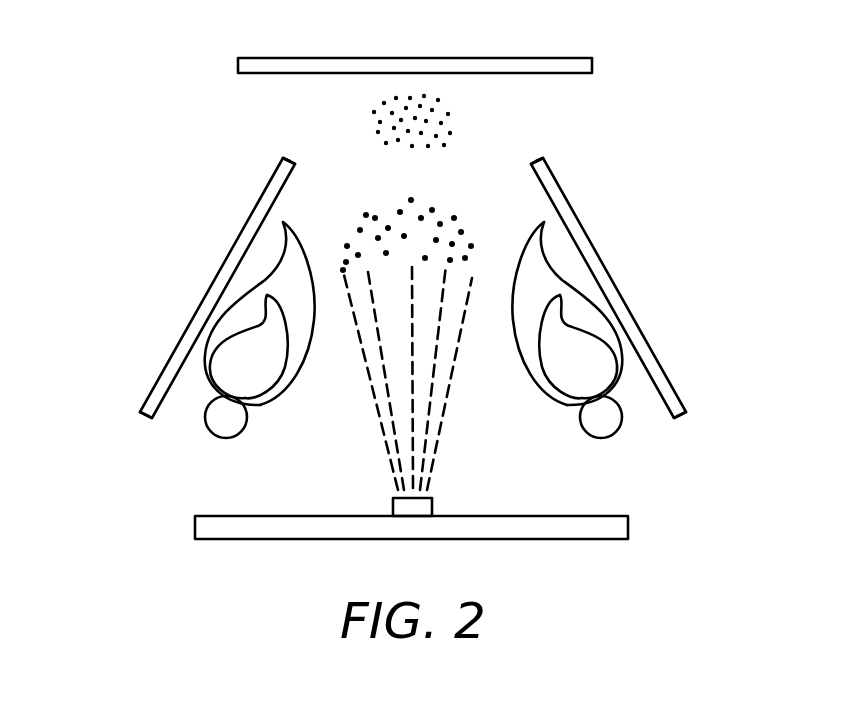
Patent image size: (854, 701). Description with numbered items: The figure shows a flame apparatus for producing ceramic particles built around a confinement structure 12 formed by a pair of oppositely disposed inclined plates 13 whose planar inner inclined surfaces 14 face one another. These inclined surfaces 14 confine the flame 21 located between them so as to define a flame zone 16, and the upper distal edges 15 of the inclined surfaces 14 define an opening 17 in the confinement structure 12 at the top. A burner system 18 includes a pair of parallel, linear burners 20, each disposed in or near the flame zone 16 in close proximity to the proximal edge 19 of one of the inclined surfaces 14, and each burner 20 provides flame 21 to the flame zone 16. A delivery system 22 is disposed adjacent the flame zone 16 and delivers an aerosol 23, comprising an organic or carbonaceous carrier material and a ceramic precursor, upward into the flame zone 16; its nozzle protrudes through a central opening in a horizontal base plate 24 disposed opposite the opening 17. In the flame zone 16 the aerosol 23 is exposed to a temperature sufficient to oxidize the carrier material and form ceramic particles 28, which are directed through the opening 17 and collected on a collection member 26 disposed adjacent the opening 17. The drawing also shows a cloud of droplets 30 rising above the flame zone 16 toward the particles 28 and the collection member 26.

The confinement structure 12 is at (118, 297).
The inclined plate 13 is at (240, 246).
The inclined surface 14 is at (297, 165).
The distal edge 15 is at (288, 156).
The flame zone 16 is at (419, 377).
The opening 17 is at (370, 162).
The burner system 18 is at (247, 440).
The proximal edge 19 is at (144, 416).
The burner 20 is at (226, 420).
The flame 21 is at (248, 378).
The delivery system 22 is at (395, 510).
The aerosol 23 is at (442, 446).
The horizontal base plate 24 is at (620, 524).
The collection member 26 is at (484, 58).
The ceramic particles 28 is at (463, 110).
The molten droplets 30 is at (446, 212).